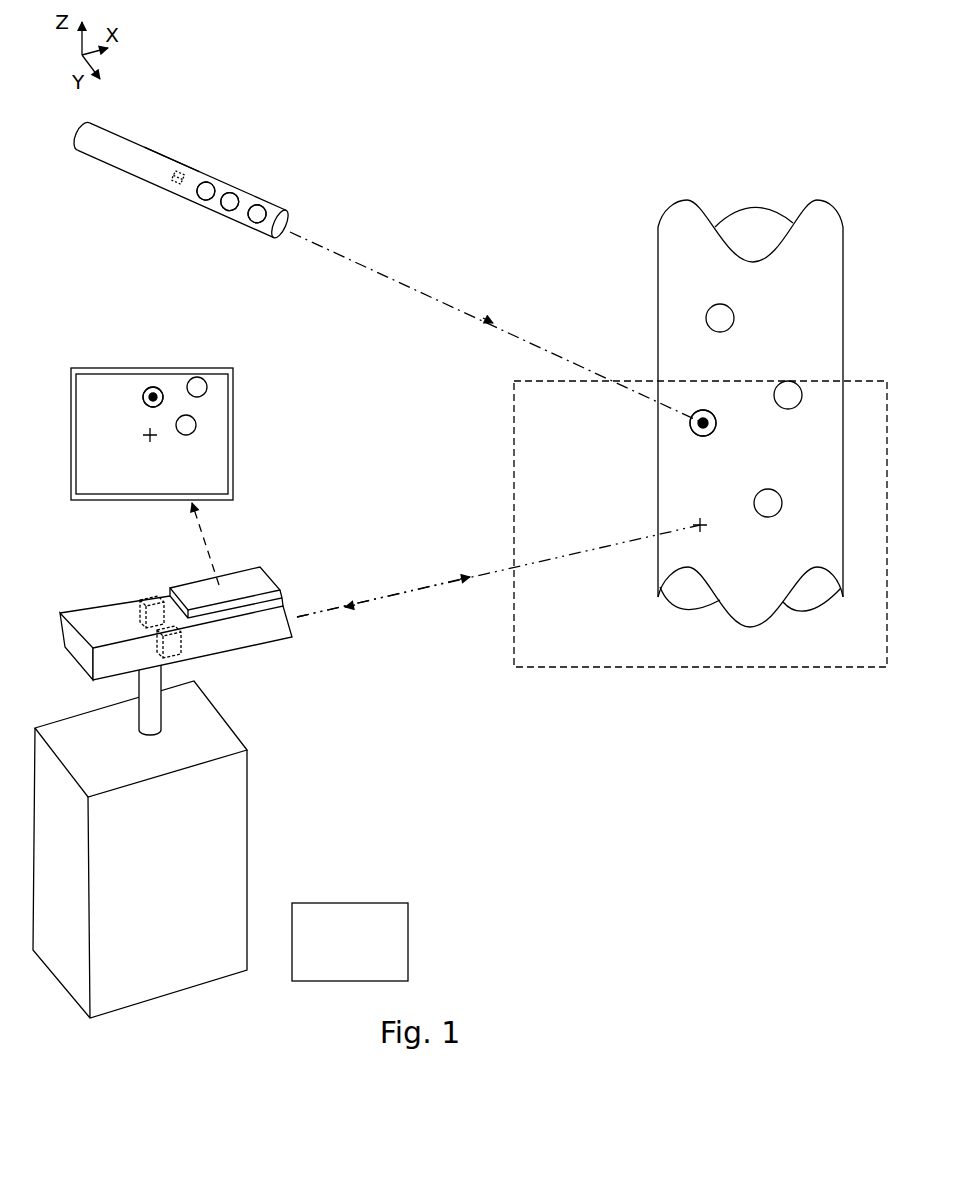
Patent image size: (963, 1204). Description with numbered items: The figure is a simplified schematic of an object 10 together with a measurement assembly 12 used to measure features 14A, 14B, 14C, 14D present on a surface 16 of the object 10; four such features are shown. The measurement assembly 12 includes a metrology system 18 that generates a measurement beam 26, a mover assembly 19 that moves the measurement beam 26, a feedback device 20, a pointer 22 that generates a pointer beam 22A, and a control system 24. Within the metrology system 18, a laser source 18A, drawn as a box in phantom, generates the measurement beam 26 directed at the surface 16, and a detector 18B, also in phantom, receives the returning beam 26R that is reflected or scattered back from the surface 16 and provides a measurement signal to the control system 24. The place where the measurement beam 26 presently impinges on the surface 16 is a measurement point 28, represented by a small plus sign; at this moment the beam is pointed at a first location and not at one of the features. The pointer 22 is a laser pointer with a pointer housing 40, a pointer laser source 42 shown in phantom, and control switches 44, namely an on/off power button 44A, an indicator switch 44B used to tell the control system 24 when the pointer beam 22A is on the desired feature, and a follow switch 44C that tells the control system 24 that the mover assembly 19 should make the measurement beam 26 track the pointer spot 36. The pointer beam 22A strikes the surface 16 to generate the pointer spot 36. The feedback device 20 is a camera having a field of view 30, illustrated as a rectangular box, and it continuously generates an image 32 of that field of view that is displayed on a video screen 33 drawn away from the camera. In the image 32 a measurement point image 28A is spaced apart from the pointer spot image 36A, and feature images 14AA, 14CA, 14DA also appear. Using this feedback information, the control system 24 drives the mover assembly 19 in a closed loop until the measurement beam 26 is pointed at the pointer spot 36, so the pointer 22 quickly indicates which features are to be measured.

The object 10 is at (686, 189).
The measurement assembly 12 is at (376, 842).
The first feature 14A is at (698, 412).
The second feature 14B is at (710, 308).
The third feature 14C is at (798, 386).
The fourth feature 14D is at (775, 516).
The feature image 14AA is at (138, 383).
The feature image 14CA is at (205, 380).
The feature image 14DA is at (180, 433).
The surface 16 is at (803, 243).
The metrology system 18 is at (71, 607).
The laser source 18A is at (165, 642).
The detector 18B is at (152, 600).
The mover assembly 19 is at (148, 839).
The feedback device 20 is at (241, 566).
The pointer 22 is at (119, 129).
The pointer beam 22A is at (405, 285).
The control system 24 is at (235, 943).
The measurement beam 26 is at (458, 583).
The returning beam 26R is at (362, 611).
The measurement point 28 is at (693, 525).
The measurement point image 28A is at (143, 435).
The field of view 30 is at (602, 667).
The image 32 is at (210, 418).
The video screen 33 is at (233, 450).
The pointer spot 36 is at (690, 423).
The pointer spot image 36A is at (154, 387).
The pointer housing 40 is at (152, 167).
The pointer laser source 42 is at (174, 180).
The control switches 44 is at (223, 210).
The on/off power button 44A is at (212, 187).
The indicator switch 44B is at (229, 197).
The follow switch 44C is at (262, 208).